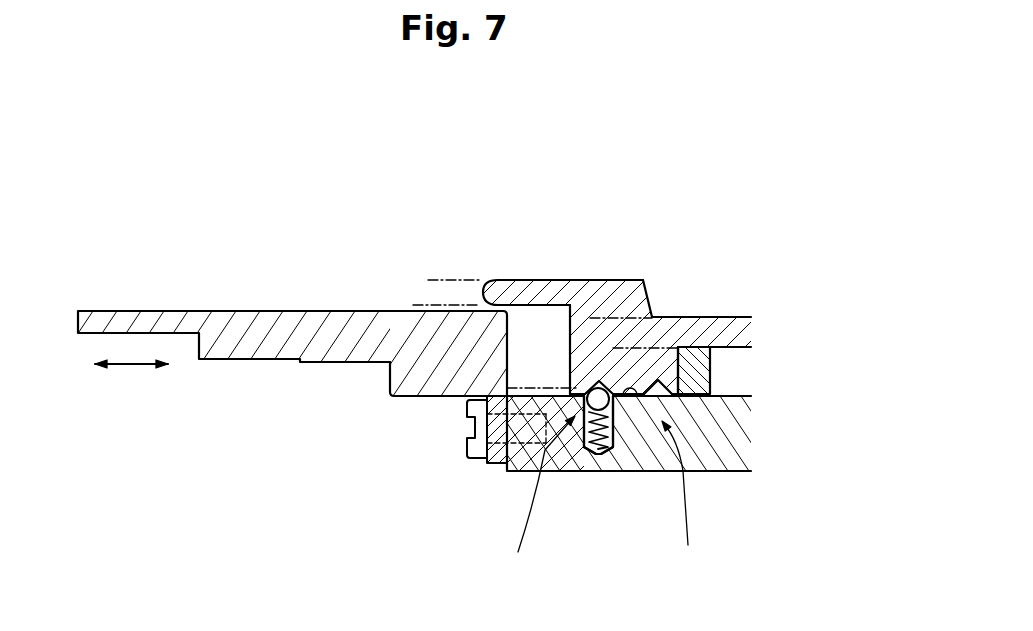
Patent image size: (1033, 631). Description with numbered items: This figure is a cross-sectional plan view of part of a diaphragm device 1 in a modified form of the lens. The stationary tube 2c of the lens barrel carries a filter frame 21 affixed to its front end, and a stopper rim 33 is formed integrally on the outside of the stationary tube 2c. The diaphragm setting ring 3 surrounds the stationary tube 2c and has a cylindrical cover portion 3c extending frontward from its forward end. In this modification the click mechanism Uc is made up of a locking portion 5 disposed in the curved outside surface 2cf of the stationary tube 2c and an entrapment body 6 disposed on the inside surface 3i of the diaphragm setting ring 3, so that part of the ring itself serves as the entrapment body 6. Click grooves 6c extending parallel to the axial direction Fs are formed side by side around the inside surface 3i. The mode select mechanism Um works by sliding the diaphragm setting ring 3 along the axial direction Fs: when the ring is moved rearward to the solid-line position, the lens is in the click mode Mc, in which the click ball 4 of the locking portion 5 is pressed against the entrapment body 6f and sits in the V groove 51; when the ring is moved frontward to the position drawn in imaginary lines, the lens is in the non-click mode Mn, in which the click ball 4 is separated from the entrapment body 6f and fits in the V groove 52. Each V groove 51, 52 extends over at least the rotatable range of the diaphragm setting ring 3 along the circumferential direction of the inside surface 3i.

The diaphragm device 1 is at (692, 222).
The filter frame 21 is at (250, 311).
The entrapment body 6 is at (566, 352).
The click groove 6c is at (578, 390).
The entrapment body 6f is at (477, 430).
The diaphragm setting ring 3 is at (692, 312).
The cover portion 3c is at (540, 280).
The inside surface 3i is at (683, 407).
The stopper rim 33 is at (712, 372).
The V groove 51 is at (608, 388).
The V groove 52 is at (668, 398).
The stationary tube 2c is at (520, 471).
The curved outside surface 2cf is at (614, 399).
The locking portion 5 is at (584, 454).
The click ball 4 is at (606, 411).
The non-click mode Mn is at (452, 265).
The click mode Mc is at (600, 270).
The click mechanism Uc is at (532, 579).
The mode select mechanism Um is at (710, 576).
The axial direction Fs is at (130, 366).